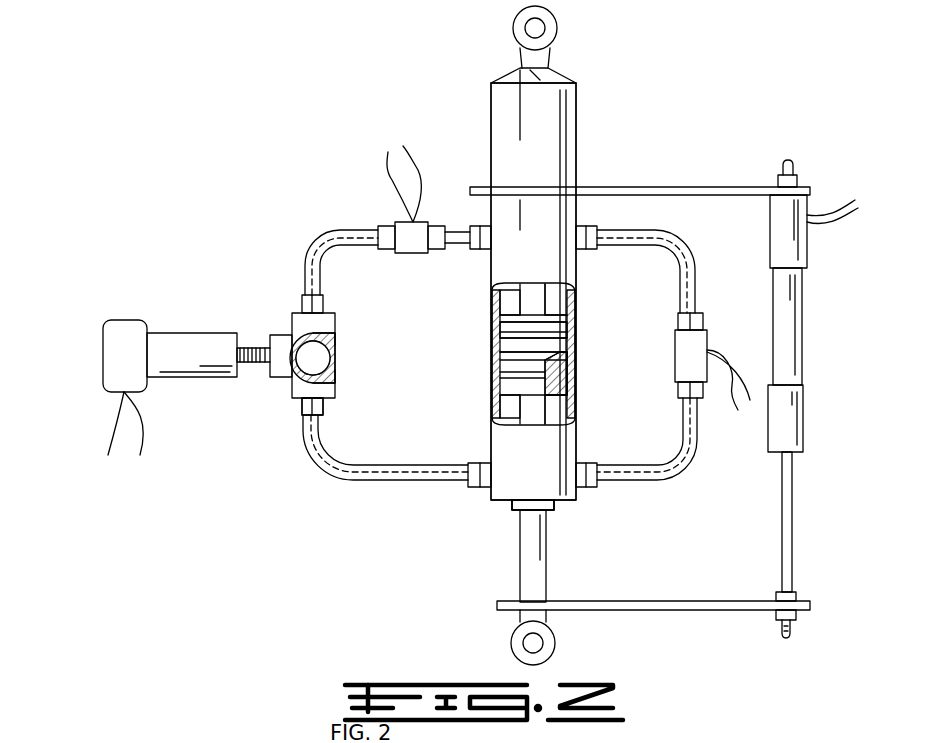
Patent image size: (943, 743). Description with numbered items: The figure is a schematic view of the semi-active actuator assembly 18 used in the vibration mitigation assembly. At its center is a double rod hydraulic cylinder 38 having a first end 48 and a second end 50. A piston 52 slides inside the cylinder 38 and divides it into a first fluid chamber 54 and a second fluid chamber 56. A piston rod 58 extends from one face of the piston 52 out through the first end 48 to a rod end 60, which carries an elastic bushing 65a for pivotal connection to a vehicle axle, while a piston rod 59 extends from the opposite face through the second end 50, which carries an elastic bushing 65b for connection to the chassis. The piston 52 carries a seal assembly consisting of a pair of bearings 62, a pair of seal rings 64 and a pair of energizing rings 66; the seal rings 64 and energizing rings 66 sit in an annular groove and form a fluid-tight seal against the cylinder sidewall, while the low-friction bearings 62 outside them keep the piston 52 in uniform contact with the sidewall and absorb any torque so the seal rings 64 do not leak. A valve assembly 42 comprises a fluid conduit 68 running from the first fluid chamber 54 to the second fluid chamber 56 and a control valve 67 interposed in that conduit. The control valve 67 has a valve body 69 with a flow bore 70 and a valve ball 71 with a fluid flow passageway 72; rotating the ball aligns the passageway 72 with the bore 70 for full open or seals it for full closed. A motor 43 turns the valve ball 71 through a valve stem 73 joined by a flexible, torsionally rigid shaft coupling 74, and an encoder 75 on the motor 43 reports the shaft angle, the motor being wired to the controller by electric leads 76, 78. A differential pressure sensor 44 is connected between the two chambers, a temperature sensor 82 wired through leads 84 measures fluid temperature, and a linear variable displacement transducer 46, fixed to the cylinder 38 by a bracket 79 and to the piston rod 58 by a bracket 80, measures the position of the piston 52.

The actuator assembly 18 is at (565, 78).
The second end 50 is at (578, 101).
The elastic bushing 65b is at (512, 26).
The elastic bushing 65a is at (511, 644).
The rod end 60 is at (520, 575).
The double rod hydraulic cylinder 38 is at (496, 505).
The first end 48 is at (565, 505).
The piston 52 is at (508, 353).
The second fluid chamber 56 is at (502, 298).
The first fluid chamber 54 is at (508, 408).
The piston rod 59 is at (560, 302).
The bearings 62 is at (565, 319).
The energizing rings 66 is at (567, 358).
The seal rings 64 is at (560, 372).
The piston rod 58 is at (560, 415).
The bracket 79 is at (680, 186).
The bracket 80 is at (670, 611).
The linear variable displacement transducer 46 is at (806, 410).
The temperature sensor 82 is at (414, 254).
The leads 84 is at (392, 183).
The fluid conduit 68 is at (333, 478).
The differential pressure sensor 44 is at (708, 336).
The valve assembly 42 is at (296, 313).
The flow bore 70 is at (318, 396).
The fluid flow passageway 72 is at (330, 358).
The valve body 69 is at (333, 341).
The control valve 67 is at (333, 322).
The valve ball 71 is at (333, 370).
The shaft coupling 74 is at (260, 368).
The valve stem 73 is at (263, 346).
The motor 43 is at (181, 333).
The encoder 75 is at (103, 335).
The electric lead 78 is at (110, 435).
The electric lead 76 is at (147, 436).